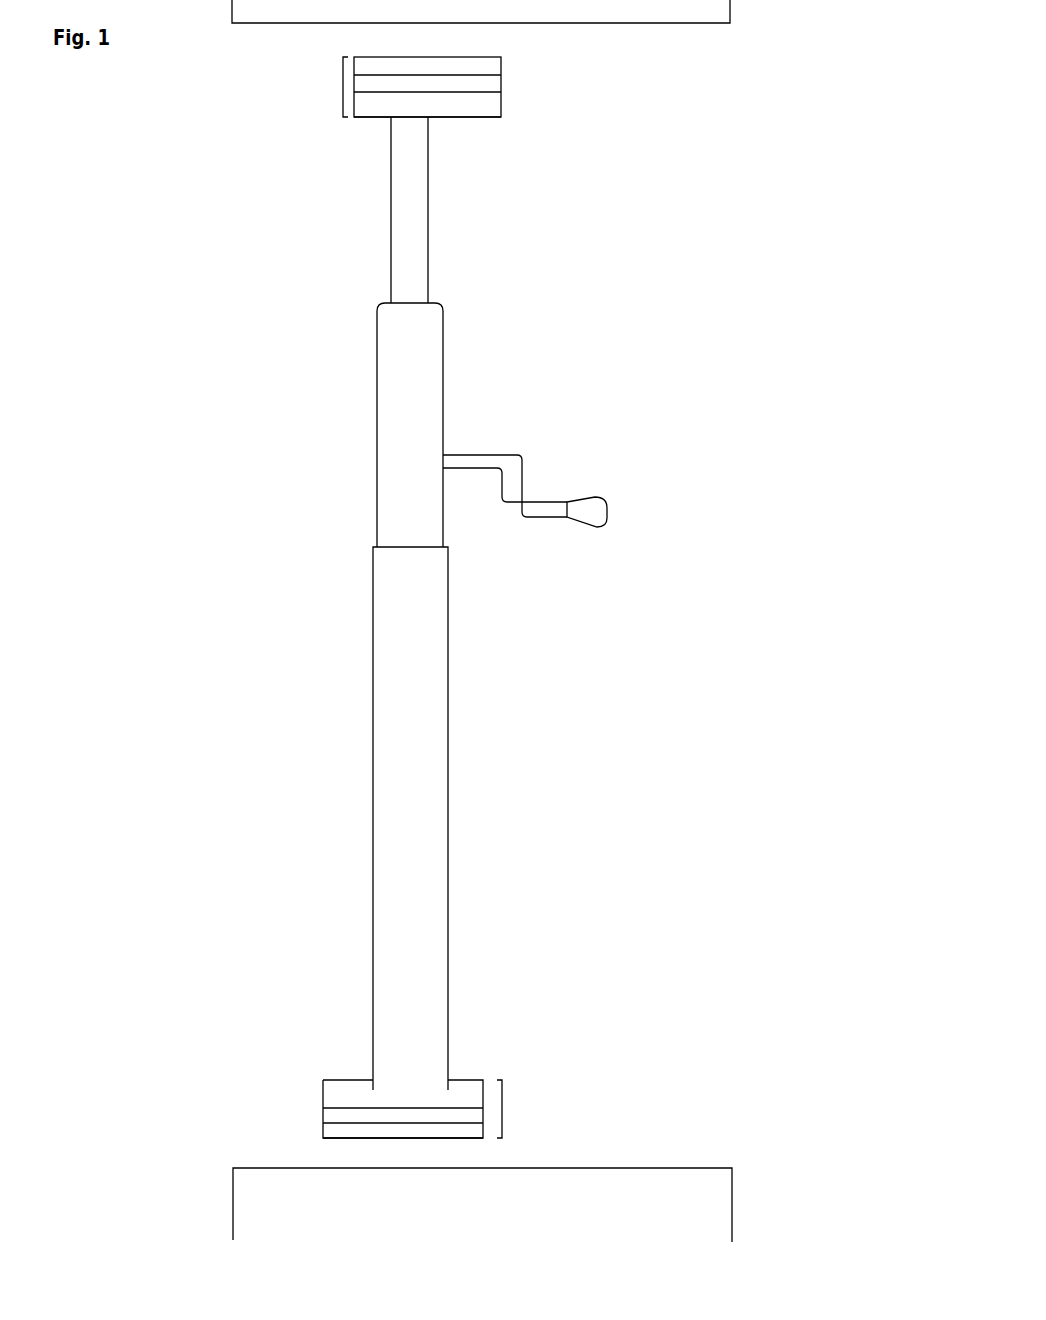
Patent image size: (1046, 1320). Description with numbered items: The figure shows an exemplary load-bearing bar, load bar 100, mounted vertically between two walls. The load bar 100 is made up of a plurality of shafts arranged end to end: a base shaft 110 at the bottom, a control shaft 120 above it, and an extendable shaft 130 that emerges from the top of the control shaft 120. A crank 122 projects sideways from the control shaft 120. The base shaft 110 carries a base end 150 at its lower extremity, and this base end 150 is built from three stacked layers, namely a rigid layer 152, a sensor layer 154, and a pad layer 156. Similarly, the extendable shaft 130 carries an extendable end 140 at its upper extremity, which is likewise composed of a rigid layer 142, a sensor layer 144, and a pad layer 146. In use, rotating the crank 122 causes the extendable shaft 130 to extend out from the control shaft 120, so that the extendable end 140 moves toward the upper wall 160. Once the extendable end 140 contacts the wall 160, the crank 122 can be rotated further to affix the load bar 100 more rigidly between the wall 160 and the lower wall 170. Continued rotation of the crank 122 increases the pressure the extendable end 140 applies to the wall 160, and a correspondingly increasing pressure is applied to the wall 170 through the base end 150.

The load bar 100 is at (115, 298).
The base shaft 110 is at (425, 872).
The control shaft 120 is at (393, 467).
The crank 122 is at (567, 510).
The extendable shaft 130 is at (417, 190).
The extendable end 140 is at (466, 115).
The rigid layer 142 is at (494, 105).
The sensor layer 144 is at (494, 86).
The pad layer 146 is at (494, 69).
The base end 150 is at (374, 1113).
The rigid layer 152 is at (330, 1098).
The sensor layer 154 is at (330, 1118).
The pad layer 156 is at (330, 1133).
The wall 160 is at (720, 15).
The wall 170 is at (718, 1185).